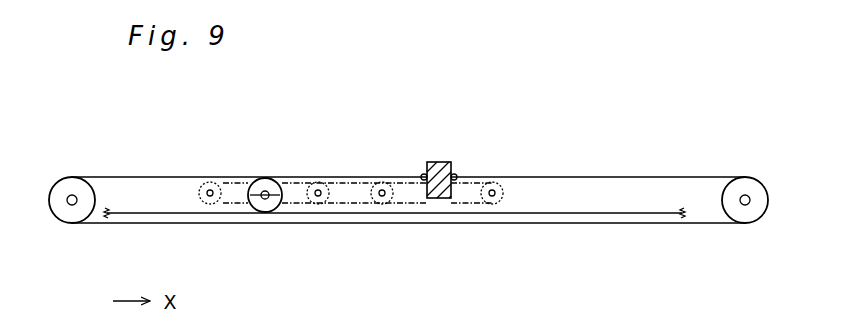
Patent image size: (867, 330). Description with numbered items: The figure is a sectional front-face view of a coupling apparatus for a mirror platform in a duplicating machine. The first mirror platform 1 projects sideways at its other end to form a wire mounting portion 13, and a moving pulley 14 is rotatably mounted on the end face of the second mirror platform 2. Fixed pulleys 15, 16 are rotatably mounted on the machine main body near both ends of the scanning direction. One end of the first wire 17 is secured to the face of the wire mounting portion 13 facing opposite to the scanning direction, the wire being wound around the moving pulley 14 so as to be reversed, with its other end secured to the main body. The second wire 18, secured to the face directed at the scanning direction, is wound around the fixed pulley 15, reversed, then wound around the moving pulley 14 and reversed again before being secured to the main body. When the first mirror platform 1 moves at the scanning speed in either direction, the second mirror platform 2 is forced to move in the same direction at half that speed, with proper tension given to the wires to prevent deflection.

The first mirror platform 1 is at (485, 163).
The second mirror platform 2 is at (323, 167).
The wire mounting portion 13 is at (443, 162).
The moving pulley 14 is at (267, 178).
The fixed pulley 15 is at (742, 184).
The fixed pulley 16 is at (69, 182).
The first wire 17 is at (375, 180).
The second wire 18 is at (163, 177).